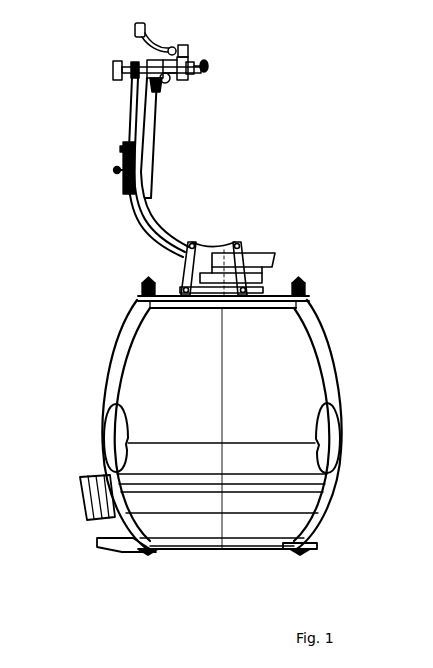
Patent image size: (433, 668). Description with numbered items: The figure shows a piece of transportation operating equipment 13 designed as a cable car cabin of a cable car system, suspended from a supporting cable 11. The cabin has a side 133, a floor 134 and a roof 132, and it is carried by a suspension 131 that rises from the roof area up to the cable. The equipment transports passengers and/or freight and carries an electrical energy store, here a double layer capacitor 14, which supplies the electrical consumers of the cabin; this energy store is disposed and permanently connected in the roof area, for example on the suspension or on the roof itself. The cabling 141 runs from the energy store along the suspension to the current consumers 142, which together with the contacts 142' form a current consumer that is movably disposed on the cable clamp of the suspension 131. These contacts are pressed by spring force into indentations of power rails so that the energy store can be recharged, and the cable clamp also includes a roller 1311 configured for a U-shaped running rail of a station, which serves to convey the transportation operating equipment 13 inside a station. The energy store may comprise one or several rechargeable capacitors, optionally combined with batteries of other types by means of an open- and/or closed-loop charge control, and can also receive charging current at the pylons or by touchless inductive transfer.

The supporting cable 11 is at (214, 72).
The roller 1311 is at (115, 69).
The transportation operating equipment 13 is at (338, 362).
The suspension 131 is at (153, 230).
The roof 132 is at (263, 297).
The side 133 is at (283, 368).
The floor 134 is at (188, 548).
The double layer capacitor 14 is at (226, 250).
The cabling 141 is at (132, 217).
The current consumer 142 is at (102, 123).
The contact 142' is at (108, 138).